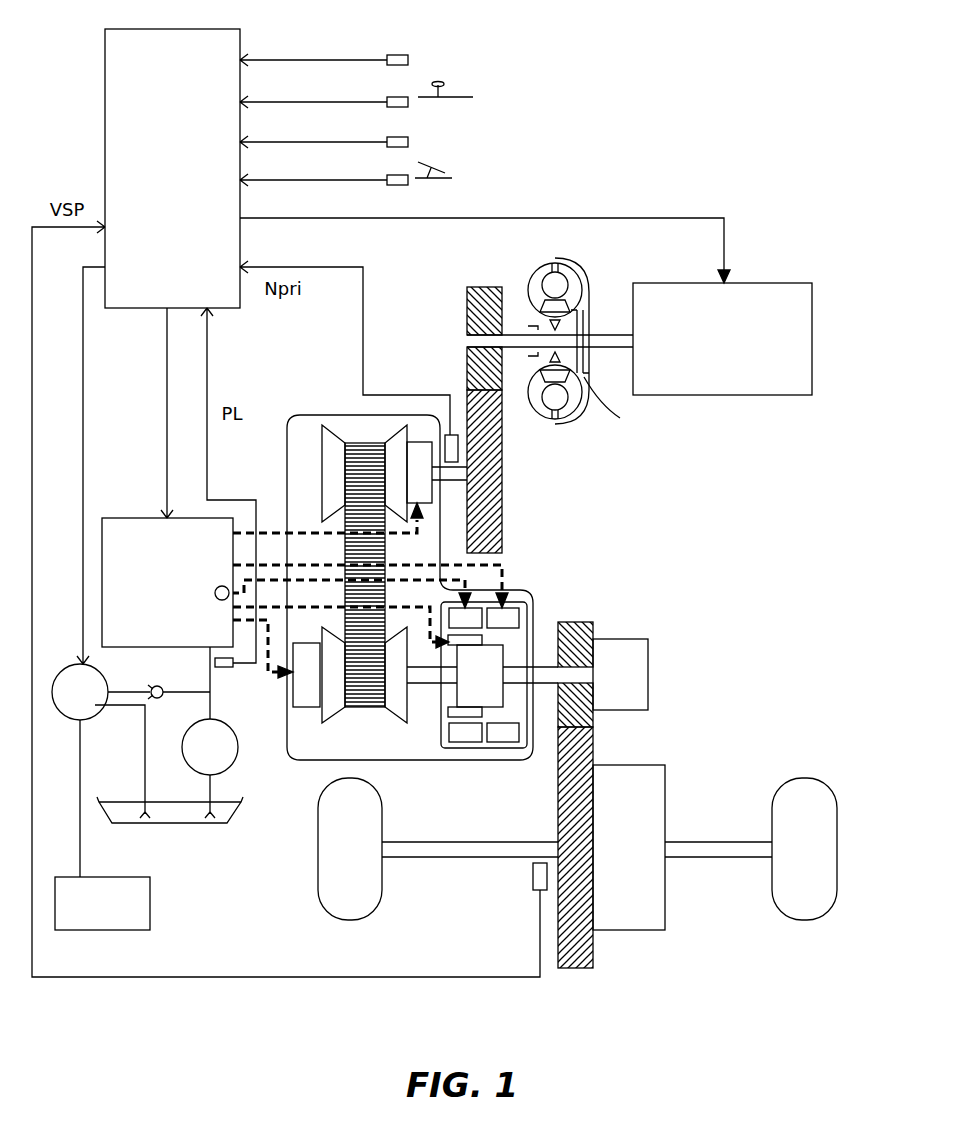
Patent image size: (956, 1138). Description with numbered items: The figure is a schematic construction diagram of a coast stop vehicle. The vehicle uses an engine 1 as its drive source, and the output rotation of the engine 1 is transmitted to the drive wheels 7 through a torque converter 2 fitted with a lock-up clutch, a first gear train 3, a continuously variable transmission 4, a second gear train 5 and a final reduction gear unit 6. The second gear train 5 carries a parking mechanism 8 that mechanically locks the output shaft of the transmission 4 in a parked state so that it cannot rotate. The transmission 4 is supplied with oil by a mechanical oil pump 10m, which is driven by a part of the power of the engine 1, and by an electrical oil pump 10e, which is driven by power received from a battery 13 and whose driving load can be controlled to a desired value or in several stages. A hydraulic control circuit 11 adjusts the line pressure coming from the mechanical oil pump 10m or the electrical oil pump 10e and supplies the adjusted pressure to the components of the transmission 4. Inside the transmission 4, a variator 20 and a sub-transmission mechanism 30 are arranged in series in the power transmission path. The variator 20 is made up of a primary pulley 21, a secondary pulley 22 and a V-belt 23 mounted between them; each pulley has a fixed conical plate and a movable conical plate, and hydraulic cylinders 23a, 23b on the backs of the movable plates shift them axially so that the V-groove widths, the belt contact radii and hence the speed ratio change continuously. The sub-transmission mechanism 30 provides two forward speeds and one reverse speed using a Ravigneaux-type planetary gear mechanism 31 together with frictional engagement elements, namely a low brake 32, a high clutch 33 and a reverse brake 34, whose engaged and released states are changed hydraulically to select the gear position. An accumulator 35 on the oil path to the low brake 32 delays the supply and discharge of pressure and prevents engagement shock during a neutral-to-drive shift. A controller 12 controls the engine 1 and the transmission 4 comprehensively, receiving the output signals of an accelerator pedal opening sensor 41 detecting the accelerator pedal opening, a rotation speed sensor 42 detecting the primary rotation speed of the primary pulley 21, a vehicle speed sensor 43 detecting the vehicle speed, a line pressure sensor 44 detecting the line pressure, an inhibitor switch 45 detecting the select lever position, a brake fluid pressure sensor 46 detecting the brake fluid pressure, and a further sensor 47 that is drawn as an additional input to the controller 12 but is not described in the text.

The engine 1 is at (797, 297).
The torque converter 2 is at (582, 290).
The first gear train 3 is at (491, 275).
The transmission 4 is at (333, 415).
The second gear train 5 is at (584, 986).
The final reduction gear unit 6 is at (628, 917).
The drive wheels 7 is at (350, 908).
The parking mechanism 8 is at (632, 665).
The electrical oil pump 10e is at (97, 709).
The mechanical oil pump 10m is at (226, 765).
The hydraulic control circuit 11 is at (120, 522).
The controller 12 is at (227, 40).
The battery 13 is at (140, 915).
The variator 20 is at (352, 552).
The primary pulley 21 is at (335, 470).
The secondary pulley 22 is at (333, 692).
The V-belt 23 is at (365, 443).
The hydraulic cylinder 23a is at (417, 452).
The hydraulic cylinder 23b is at (300, 703).
The sub-transmission mechanism 30 is at (508, 632).
The Ravigneaux-type planetary gear mechanism 31 is at (485, 670).
The low brake 32 is at (468, 620).
The high clutch 33 is at (465, 712).
The reverse brake 34 is at (503, 618).
The accumulator 35 is at (220, 601).
The accelerator pedal opening sensor 41 is at (398, 184).
The rotation speed sensor 42 is at (452, 450).
The vehicle speed sensor 43 is at (538, 880).
The line pressure sensor 44 is at (226, 667).
The inhibitor switch 45 is at (400, 100).
The brake fluid pressure sensor 46 is at (392, 144).
The engine rotation speed sensor 47 is at (400, 57).